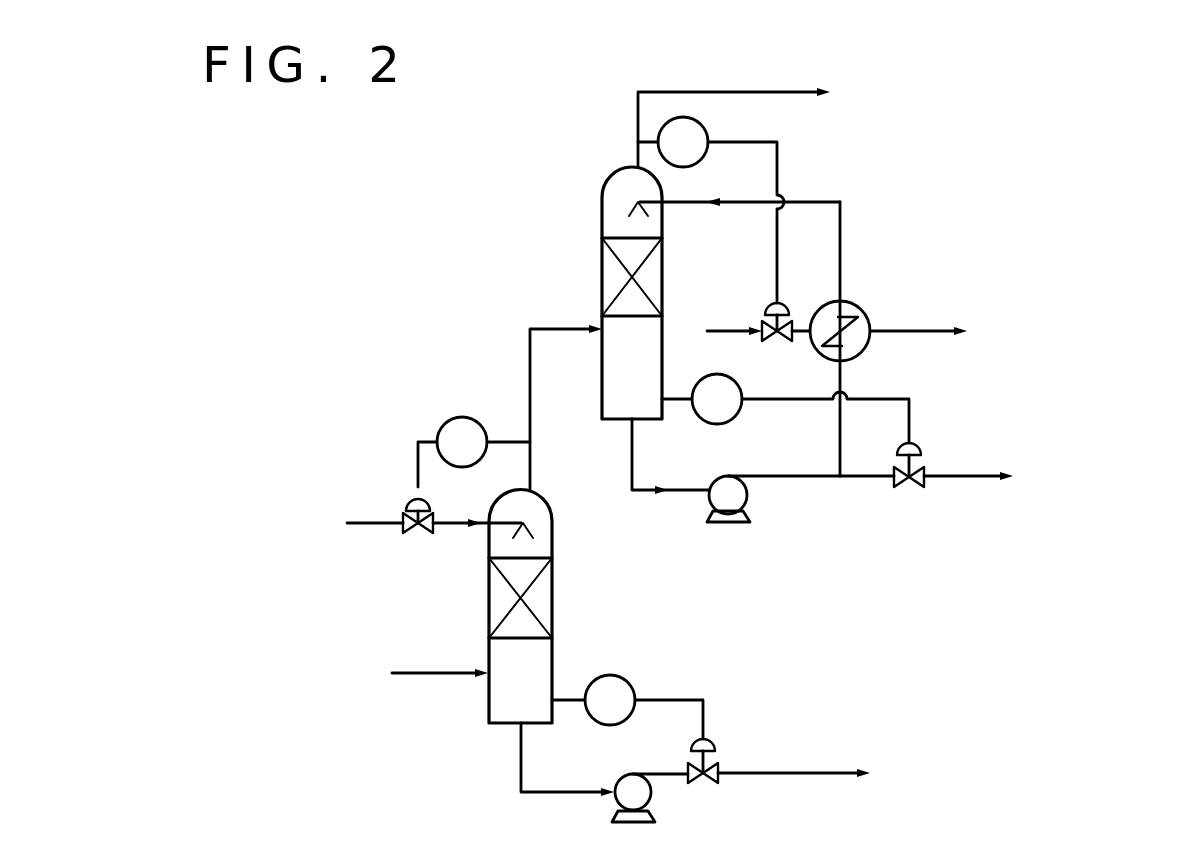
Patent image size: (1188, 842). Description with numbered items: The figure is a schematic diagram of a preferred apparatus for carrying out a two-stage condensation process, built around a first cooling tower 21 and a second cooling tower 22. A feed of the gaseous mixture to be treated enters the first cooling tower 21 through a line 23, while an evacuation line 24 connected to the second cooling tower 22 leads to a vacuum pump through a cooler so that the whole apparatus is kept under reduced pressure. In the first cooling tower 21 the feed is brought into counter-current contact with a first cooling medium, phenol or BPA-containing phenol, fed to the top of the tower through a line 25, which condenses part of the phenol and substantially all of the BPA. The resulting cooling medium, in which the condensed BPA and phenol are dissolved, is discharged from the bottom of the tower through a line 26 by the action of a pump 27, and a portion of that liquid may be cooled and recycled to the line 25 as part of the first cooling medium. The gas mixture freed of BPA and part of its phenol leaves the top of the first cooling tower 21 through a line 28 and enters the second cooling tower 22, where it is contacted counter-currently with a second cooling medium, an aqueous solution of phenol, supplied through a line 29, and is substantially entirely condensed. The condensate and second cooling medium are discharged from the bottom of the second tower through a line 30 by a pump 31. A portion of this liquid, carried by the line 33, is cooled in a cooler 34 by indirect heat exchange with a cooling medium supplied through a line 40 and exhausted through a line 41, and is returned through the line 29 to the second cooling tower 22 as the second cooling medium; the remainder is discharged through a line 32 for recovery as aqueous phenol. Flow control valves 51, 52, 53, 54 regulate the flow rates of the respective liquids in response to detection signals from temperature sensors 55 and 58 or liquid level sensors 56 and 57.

The first cooling tower 21 is at (553, 590).
The second cooling tower 22 is at (602, 262).
The line 23 is at (430, 676).
The evacuation line 24 is at (746, 92).
The line 25 is at (366, 526).
The line 26 is at (810, 773).
The pump 27 is at (652, 798).
The line 28 is at (528, 355).
The line 29 is at (703, 202).
The line 30 is at (630, 456).
The pump 31 is at (745, 506).
The line 32 is at (975, 480).
The recycle line 33 is at (838, 451).
The cooler 34 is at (850, 303).
The line 40 is at (722, 331).
The line 41 is at (926, 331).
The flow control valve 51 is at (426, 534).
The flow control valve 52 is at (720, 766).
The flow control valve 53 is at (911, 488).
The flow control valve 54 is at (777, 342).
The temperature sensor 55 is at (448, 422).
The liquid level sensor 56 is at (628, 682).
The liquid level sensor 57 is at (735, 412).
The temperature sensor 58 is at (706, 122).